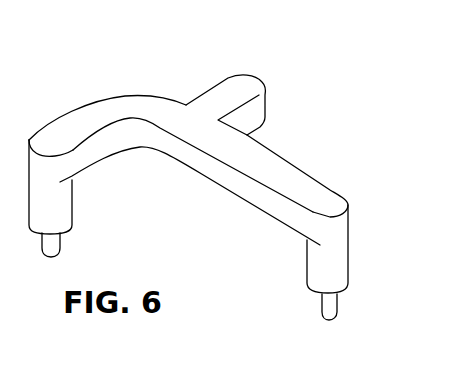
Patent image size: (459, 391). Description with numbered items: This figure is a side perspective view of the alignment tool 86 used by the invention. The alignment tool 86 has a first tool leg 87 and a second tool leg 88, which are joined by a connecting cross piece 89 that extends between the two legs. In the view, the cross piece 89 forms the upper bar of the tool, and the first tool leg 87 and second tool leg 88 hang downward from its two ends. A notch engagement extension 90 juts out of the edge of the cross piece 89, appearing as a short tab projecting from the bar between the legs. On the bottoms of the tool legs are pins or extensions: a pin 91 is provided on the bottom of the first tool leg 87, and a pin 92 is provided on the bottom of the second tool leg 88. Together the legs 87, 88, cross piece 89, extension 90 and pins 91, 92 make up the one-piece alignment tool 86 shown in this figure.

The alignment tool 86 is at (293, 139).
The first tool leg 87 is at (67, 204).
The second tool leg 88 is at (345, 250).
The connecting cross piece 89 is at (133, 108).
The notch engagement extension 90 is at (225, 98).
The pin 91 is at (58, 248).
The pin 92 is at (320, 305).